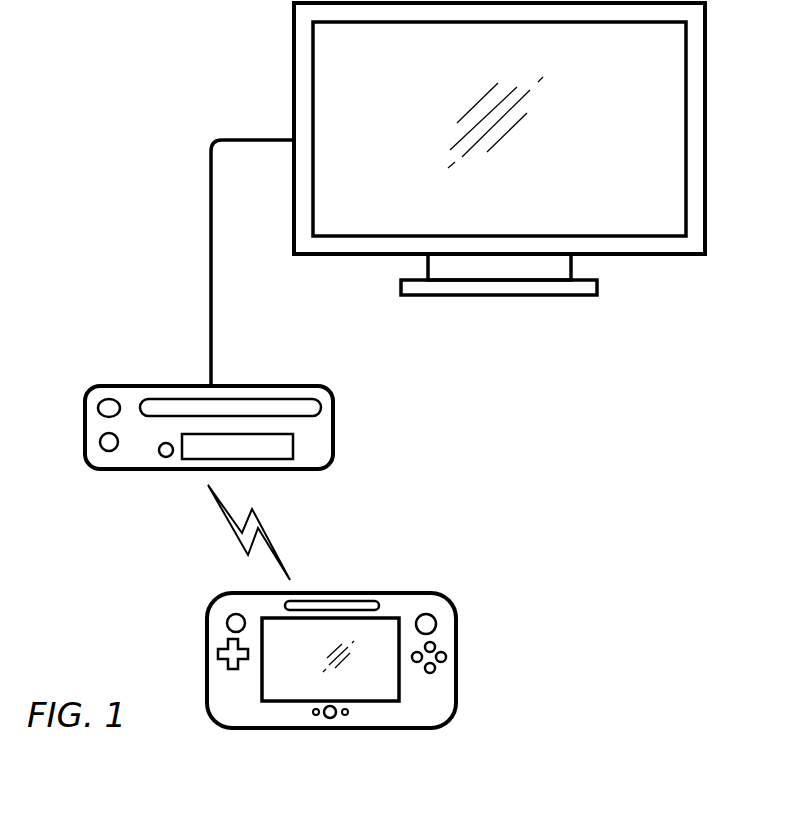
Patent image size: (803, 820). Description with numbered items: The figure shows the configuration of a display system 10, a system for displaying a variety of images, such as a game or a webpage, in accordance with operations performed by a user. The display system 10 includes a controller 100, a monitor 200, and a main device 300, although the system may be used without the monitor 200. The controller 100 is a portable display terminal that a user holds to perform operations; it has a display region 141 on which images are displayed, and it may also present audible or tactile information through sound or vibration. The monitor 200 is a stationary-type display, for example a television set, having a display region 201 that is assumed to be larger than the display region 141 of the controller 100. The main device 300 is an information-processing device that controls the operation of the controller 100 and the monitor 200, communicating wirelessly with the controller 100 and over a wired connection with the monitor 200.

The display system 10 is at (628, 607).
The controller 100 is at (390, 591).
The display region 141 is at (392, 690).
The monitor 200 is at (294, 64).
The display region 201 is at (330, 106).
The main device 300 is at (176, 386).